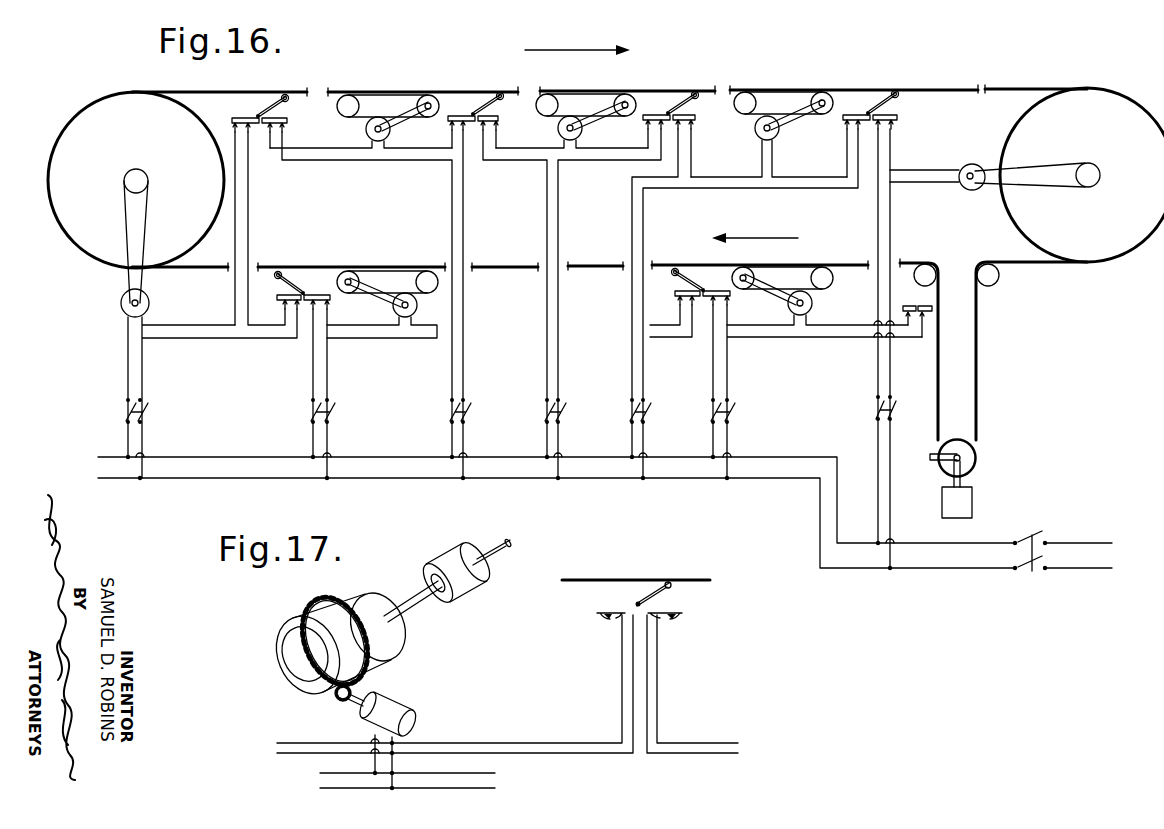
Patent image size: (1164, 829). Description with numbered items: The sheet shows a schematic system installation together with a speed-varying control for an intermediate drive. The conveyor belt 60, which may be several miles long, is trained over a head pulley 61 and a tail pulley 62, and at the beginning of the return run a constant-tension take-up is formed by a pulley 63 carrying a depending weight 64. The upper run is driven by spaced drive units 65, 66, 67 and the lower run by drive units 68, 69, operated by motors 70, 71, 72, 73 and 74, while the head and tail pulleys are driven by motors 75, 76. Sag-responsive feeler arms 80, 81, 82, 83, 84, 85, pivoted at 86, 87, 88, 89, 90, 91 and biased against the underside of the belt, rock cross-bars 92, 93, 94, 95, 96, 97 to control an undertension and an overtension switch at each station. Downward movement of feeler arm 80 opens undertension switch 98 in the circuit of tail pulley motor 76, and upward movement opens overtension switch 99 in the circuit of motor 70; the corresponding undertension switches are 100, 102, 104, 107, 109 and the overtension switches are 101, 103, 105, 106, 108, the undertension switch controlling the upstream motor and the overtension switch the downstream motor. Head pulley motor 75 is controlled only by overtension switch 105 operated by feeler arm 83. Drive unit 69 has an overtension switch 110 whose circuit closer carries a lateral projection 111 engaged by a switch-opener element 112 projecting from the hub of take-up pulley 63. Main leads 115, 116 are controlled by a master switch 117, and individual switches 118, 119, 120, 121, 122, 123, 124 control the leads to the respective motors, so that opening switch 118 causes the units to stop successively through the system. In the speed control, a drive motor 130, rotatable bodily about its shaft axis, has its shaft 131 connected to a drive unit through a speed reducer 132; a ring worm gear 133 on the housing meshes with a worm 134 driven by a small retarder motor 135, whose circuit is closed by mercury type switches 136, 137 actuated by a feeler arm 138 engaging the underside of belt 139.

In FIG. 16, the conveyor belt 60 is at (222, 92).
In FIG. 16, the head pulley 61 is at (1012, 130).
In FIG. 16, the tail pulley 62 is at (85, 242).
In FIG. 16, the take-up pulley 63 is at (976, 452).
In FIG. 16, the take-up weight 64 is at (972, 500).
In FIG. 16, the drive unit 65 is at (385, 108).
In FIG. 16, the drive unit 66 is at (578, 107).
In FIG. 16, the drive unit 67 is at (773, 106).
In FIG. 16, the drive unit 68 is at (386, 281).
In FIG. 16, the drive unit 69 is at (789, 277).
In FIG. 16, the drive motor 70 is at (366, 131).
In FIG. 16, the drive motor 71 is at (561, 130).
In FIG. 16, the drive motor 72 is at (760, 135).
In FIG. 16, the drive motor 73 is at (418, 305).
In FIG. 16, the drive motor 74 is at (813, 303).
In FIG. 16, the head pulley drive motor 75 is at (968, 190).
In FIG. 16, the tail pulley drive motor 76 is at (150, 303).
In FIG. 16, the feeler arm 80 is at (284, 94).
In FIG. 16, the feeler arm 81 is at (496, 94).
In FIG. 16, the feeler arm 82 is at (690, 94).
In FIG. 16, the feeler arm 83 is at (888, 93).
In FIG. 16, the feeler arm 84 is at (688, 275).
In FIG. 16, the feeler arm 85 is at (286, 271).
In FIG. 16, the pivot 86 is at (259, 120).
In FIG. 16, the pivot 87 is at (473, 118).
In FIG. 16, the pivot 88 is at (668, 116).
In FIG. 16, the pivot 89 is at (868, 116).
In FIG. 16, the pivot 90 is at (703, 294).
In FIG. 16, the pivot 91 is at (303, 297).
In FIG. 16, the cross-bar 92 is at (240, 116).
In FIG. 16, the cross-bar 93 is at (458, 115).
In FIG. 16, the cross-bar 94 is at (655, 114).
In FIG. 16, the cross-bar 95 is at (857, 114).
In FIG. 16, the cross-bar 96 is at (706, 290).
In FIG. 16, the cross-bar 97 is at (312, 294).
In FIG. 16, the undertension switch 98 is at (232, 121).
In FIG. 16, the overtension switch 99 is at (288, 121).
In FIG. 16, the undertension switch 100 is at (450, 120).
In FIG. 16, the overtension switch 101 is at (499, 118).
In FIG. 16, the undertension switch 102 is at (645, 118).
In FIG. 16, the overtension switch 103 is at (698, 119).
In FIG. 16, the undertension switch 104 is at (844, 119).
In FIG. 16, the overtension switch 105 is at (900, 118).
In FIG. 16, the overtension switch 106 is at (280, 296).
In FIG. 16, the undertension switch 107 is at (330, 298).
In FIG. 16, the overtension switch 108 is at (678, 296).
In FIG. 16, the undertension switch 109 is at (732, 296).
In FIG. 16, the overtension switch 110 is at (912, 304).
In FIG. 16, the lateral projection 111 is at (935, 305).
In FIG. 16, the switch-opener element 112 is at (932, 460).
In FIG. 16, the main lead 115 is at (225, 457).
In FIG. 16, the main lead 116 is at (250, 478).
In FIG. 16, the master switch 117 is at (1030, 538).
In FIG. 16, the individual switch 118 is at (876, 410).
In FIG. 16, the individual switch 119 is at (650, 410).
In FIG. 16, the individual switch 120 is at (565, 410).
In FIG. 16, the individual switch 121 is at (472, 410).
In FIG. 16, the individual switch 122 is at (150, 410).
In FIG. 16, the individual switch 123 is at (336, 410).
In FIG. 16, the individual switch 124 is at (735, 410).
In FIG. 17, the drive motor 130 is at (305, 680).
In FIG. 17, the shaft 131 is at (410, 605).
In FIG. 17, the speed reducer 132 is at (448, 548).
In FIG. 17, the ring worm gear 133 is at (320, 598).
In FIG. 17, the worm 134 is at (340, 702).
In FIG. 17, the retarder motor 135 is at (405, 705).
In FIG. 17, the mercury type switch 136 is at (614, 622).
In FIG. 17, the mercury type switch 137 is at (672, 620).
In FIG. 17, the feeler arm 138 is at (634, 600).
In FIG. 17, the belt 139 is at (700, 580).